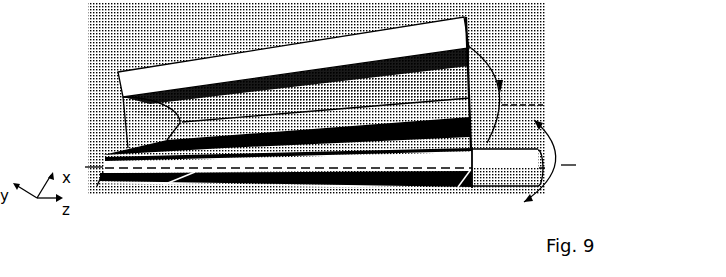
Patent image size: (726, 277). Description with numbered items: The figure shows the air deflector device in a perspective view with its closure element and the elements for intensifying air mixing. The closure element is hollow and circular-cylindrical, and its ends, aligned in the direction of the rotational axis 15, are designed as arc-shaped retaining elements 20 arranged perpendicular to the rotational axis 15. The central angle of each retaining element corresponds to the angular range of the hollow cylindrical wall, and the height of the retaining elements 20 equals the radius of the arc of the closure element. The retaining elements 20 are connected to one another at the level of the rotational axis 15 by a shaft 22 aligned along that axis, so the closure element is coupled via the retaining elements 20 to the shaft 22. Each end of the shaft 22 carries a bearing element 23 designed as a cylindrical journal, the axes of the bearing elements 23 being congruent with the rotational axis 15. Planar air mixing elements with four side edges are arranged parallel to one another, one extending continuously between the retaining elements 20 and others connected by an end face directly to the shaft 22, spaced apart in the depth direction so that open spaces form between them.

The rotational axis 15 is at (562, 165).
The retaining elements 20 is at (138, 123).
The shaft 22 is at (292, 179).
The bearing elements 23 is at (105, 167).